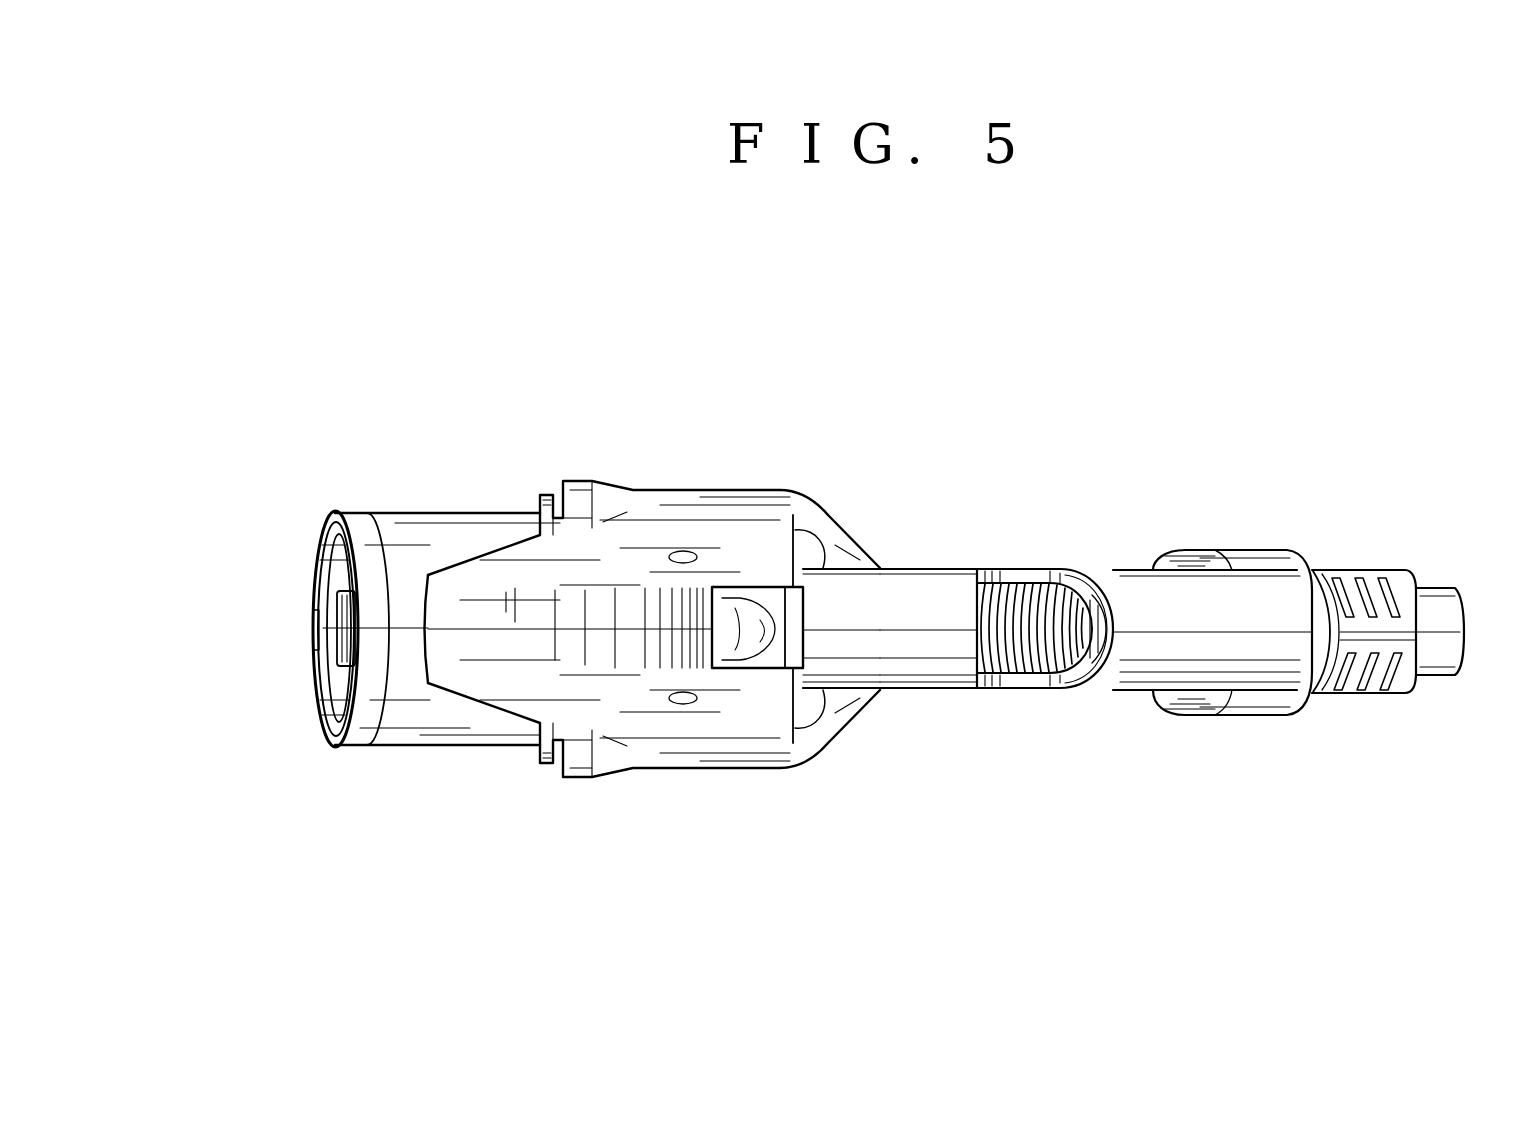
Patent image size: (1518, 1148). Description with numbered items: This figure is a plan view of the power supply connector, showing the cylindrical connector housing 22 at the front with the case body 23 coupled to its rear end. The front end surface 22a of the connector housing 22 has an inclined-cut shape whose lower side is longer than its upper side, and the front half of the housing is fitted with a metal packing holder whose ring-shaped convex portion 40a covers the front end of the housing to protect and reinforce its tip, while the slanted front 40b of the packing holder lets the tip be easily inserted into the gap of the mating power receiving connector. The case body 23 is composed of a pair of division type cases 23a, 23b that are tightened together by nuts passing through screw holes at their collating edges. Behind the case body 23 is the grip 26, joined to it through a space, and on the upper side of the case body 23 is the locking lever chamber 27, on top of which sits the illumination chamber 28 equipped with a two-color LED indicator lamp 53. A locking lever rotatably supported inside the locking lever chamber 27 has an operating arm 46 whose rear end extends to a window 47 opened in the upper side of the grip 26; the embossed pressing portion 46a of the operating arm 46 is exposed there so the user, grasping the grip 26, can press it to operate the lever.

The connector housing 22 is at (430, 745).
The front end surface 22a is at (350, 745).
The case body 23 is at (867, 740).
The division type case 23a is at (860, 608).
The division type case 23b is at (937, 690).
The grip 26 is at (1178, 668).
The locking lever chamber 27 is at (707, 525).
The illumination chamber 28 is at (818, 590).
The ring-shaped convex portion 40a is at (362, 518).
The front of packing holder 40b is at (330, 520).
The operating arm 46 is at (1066, 556).
The pressing portion 46a is at (1023, 577).
The window 47 is at (1073, 680).
The two-color indicator lamp 53 is at (722, 600).